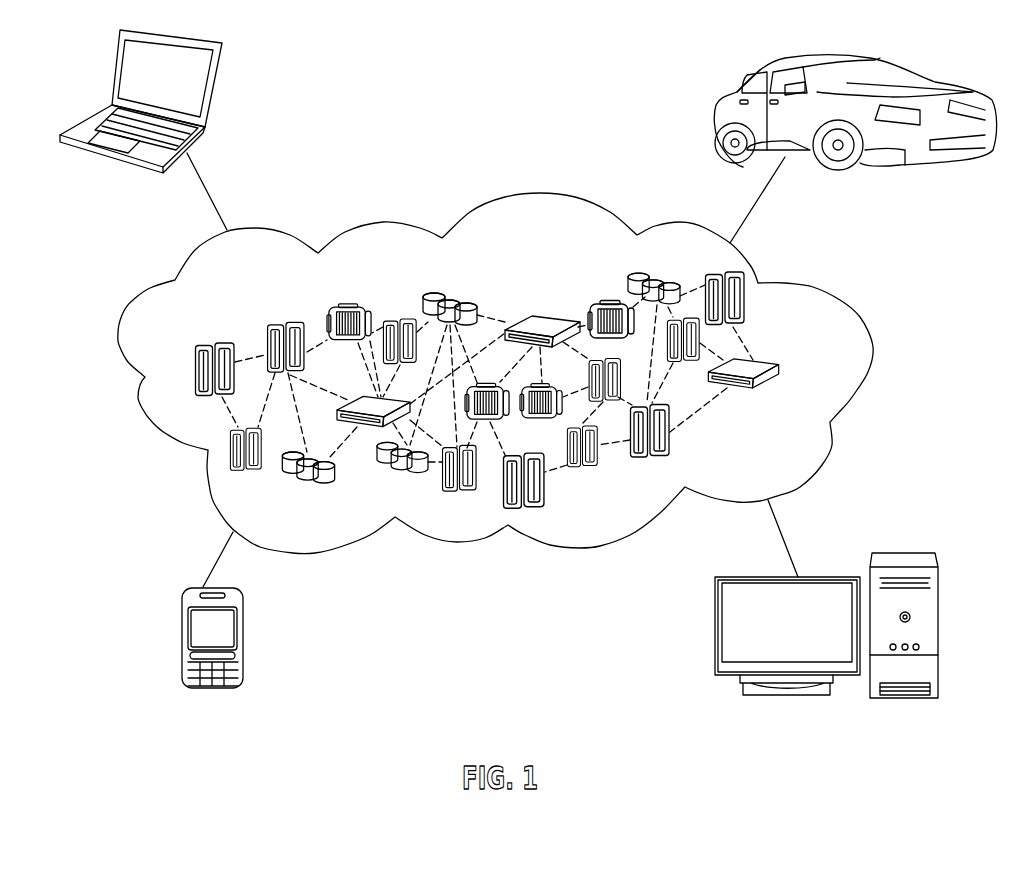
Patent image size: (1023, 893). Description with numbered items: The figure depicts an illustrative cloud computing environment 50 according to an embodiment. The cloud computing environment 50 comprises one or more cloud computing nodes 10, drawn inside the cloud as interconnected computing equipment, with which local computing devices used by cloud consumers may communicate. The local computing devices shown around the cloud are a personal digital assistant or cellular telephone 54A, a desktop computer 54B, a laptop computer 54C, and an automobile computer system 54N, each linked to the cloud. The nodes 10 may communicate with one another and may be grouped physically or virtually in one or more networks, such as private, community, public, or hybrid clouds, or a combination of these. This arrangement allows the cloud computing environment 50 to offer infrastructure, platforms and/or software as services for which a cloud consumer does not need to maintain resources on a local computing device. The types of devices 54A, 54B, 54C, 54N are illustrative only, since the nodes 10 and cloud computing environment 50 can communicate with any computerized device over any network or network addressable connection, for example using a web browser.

The cloud computing nodes 10 is at (823, 370).
The cloud computing environment 50 is at (837, 293).
The personal digital assistant (PDA) or cellular telephone 54A is at (181, 643).
The desktop computer 54B is at (907, 553).
The laptop computer 54C is at (219, 92).
The automobile computer system 54N is at (724, 100).